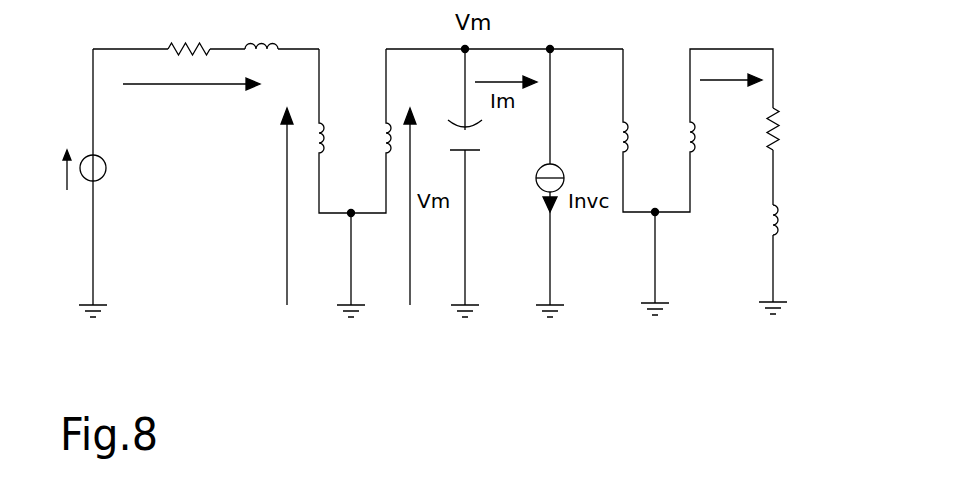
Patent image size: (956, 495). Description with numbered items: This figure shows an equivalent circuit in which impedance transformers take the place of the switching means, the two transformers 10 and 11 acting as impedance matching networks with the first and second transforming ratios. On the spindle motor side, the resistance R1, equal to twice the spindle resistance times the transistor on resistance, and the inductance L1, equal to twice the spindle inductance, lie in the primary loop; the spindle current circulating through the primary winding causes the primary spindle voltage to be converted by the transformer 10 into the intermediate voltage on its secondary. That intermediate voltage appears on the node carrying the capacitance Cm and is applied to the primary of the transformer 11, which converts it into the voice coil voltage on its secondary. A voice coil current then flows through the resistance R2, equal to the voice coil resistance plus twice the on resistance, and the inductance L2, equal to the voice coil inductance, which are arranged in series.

The transformer 10 is at (227, 193).
The transformer 11 is at (681, 192).
The resistance R1 is at (189, 32).
The inductance L1 is at (261, 29).
The mechanical capacitance Cm is at (486, 141).
The resistance R2 is at (790, 129).
The inductance L2 is at (792, 220).